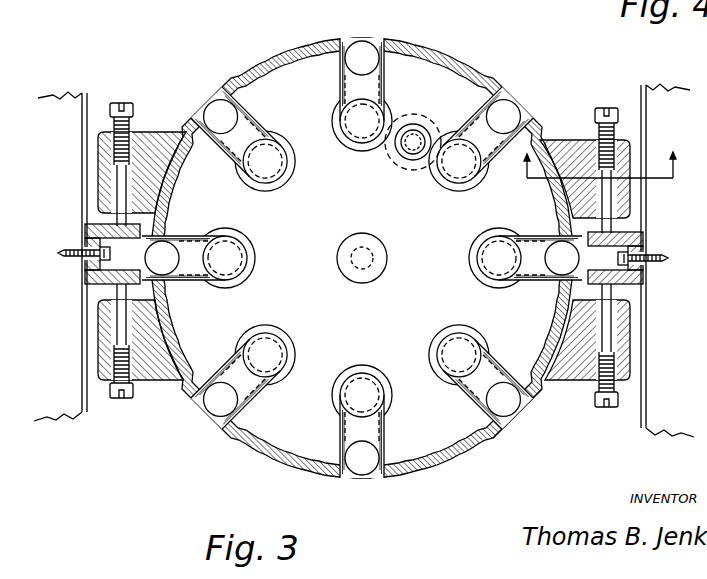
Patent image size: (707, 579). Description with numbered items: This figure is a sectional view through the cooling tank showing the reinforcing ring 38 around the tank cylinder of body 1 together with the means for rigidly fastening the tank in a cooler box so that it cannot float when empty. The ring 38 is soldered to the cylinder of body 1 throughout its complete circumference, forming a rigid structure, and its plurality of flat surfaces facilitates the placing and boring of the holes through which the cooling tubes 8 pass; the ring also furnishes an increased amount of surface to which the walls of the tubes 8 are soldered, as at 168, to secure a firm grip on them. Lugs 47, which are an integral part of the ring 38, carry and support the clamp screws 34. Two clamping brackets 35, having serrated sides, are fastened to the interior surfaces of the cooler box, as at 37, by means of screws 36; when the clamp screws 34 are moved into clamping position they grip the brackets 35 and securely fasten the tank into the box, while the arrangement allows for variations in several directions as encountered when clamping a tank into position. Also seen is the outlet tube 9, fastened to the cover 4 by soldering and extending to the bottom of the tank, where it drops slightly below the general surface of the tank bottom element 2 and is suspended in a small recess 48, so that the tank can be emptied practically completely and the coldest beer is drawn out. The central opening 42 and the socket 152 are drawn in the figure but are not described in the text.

The cooling tank cylinder body 1 is at (316, 452).
The tank bottom element 2 is at (438, 425).
The cover 4 is at (600, 167).
The cooling tubes 8 is at (238, 244).
The outlet tube 9 is at (447, 146).
The clamp screws 34 is at (133, 108).
The clamping bracket 35 is at (85, 232).
The screws 36 is at (75, 256).
The cooler box interior surface fastening point 37 is at (86, 407).
The ring 38 is at (318, 478).
The central hub opening 42 is at (388, 259).
The lugs 47 is at (155, 378).
The recess 48 is at (422, 131).
The top socket 152 is at (376, 44).
The solder joint 168 is at (195, 383).